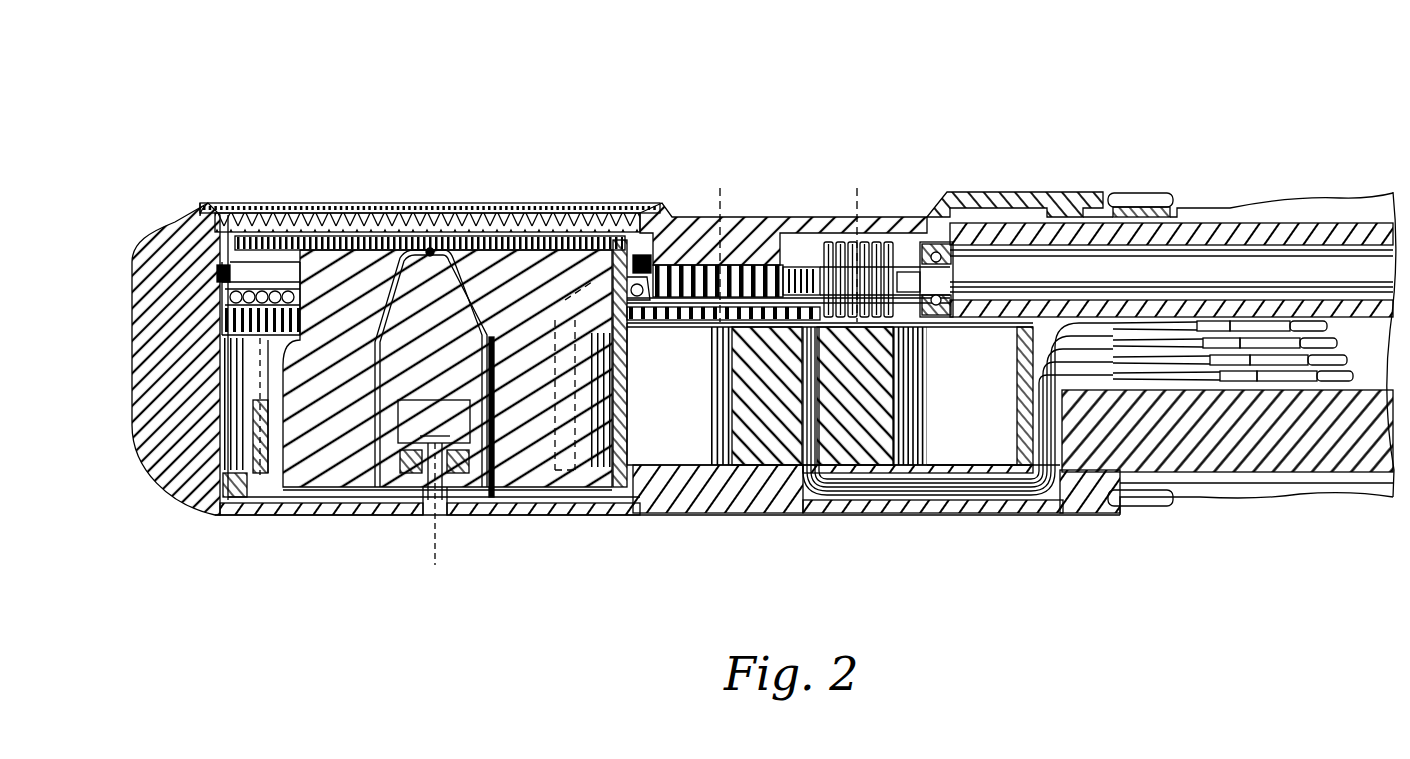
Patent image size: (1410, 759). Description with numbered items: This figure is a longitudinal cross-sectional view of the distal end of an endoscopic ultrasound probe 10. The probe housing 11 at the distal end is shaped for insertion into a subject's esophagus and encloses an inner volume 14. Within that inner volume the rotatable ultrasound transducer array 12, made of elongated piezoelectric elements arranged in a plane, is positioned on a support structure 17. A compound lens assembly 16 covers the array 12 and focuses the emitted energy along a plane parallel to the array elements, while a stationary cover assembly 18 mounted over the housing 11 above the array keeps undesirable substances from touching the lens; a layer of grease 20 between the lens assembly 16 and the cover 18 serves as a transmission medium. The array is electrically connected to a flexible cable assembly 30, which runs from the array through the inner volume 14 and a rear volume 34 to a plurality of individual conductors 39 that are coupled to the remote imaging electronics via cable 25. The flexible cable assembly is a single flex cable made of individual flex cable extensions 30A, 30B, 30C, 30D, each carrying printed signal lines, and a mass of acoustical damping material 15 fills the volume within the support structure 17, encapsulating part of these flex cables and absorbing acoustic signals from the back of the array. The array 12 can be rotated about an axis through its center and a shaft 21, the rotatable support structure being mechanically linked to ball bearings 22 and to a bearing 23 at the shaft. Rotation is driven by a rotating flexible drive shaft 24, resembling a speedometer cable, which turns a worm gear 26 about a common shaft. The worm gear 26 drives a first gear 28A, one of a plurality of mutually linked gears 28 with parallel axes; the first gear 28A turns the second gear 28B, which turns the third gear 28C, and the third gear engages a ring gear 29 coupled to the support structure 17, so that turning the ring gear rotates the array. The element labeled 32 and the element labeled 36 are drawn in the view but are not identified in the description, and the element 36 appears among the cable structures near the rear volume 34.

The probe 10 is at (455, 133).
The probe housing 11 is at (710, 515).
The rotatable ultrasound transducer array 12 is at (597, 200).
The inner volume 14 is at (218, 510).
The acoustical damping material 15 is at (505, 262).
The compound lens assembly 16 is at (557, 213).
The support structure 17 is at (265, 518).
The stationary cover assembly 18 is at (303, 196).
The layer of grease 20 is at (210, 203).
The shaft 21 is at (440, 520).
The ball bearings 22 is at (218, 298).
The bearing 23 is at (434, 421).
The rotating flexible drive shaft 24 is at (1022, 225).
The cable 25 is at (1243, 233).
The worm gear 26 is at (883, 240).
The plurality of gears 28 is at (752, 262).
The first gear 28A is at (806, 262).
The second gear 28B is at (742, 235).
The third gear 28C is at (664, 328).
The ring gear 29 is at (222, 322).
The flexible cable assembly 30 is at (226, 382).
The flex cable extension 30A is at (287, 492).
The flex cable extension 30B is at (378, 497).
The flex cable extension 30C is at (478, 492).
The flex cable extension 30D is at (520, 505).
The electrode layer 32 is at (362, 236).
The rear volume 34 is at (958, 440).
The wire bundle 36 is at (793, 508).
The individual conductors 39 is at (1306, 395).